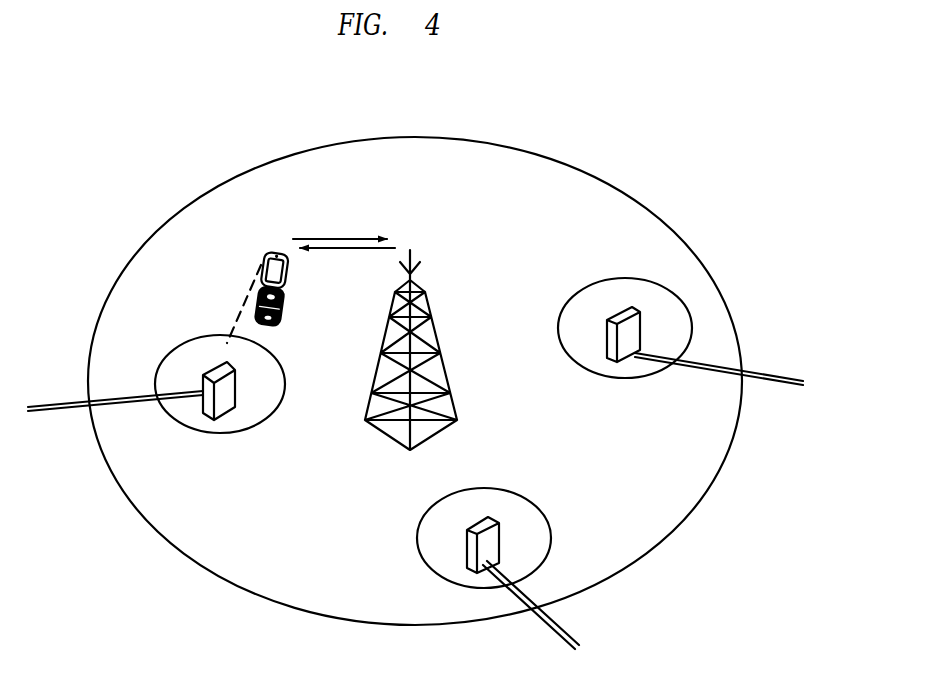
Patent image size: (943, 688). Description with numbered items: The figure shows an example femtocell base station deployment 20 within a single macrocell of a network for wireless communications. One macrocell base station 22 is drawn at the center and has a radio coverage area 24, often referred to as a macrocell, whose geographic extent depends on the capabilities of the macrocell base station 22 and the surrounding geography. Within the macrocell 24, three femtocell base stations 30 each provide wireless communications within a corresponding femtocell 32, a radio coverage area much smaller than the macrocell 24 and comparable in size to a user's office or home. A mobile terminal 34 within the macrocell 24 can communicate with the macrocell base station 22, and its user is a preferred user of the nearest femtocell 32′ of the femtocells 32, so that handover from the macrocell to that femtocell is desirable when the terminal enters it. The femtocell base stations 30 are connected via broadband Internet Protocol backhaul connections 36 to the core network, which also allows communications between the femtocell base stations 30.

The wireless communication system 20 is at (756, 178).
The macrocell base station 22 is at (428, 427).
The radio coverage area 24 is at (572, 165).
The femtocell base station 30 is at (205, 418).
The femtocell 32 is at (608, 278).
The nearest femtocell 32′ is at (210, 337).
The mobile terminal 34 is at (287, 302).
The backhaul connection 36 is at (60, 410).